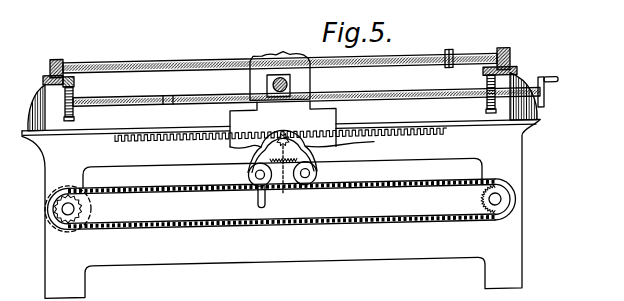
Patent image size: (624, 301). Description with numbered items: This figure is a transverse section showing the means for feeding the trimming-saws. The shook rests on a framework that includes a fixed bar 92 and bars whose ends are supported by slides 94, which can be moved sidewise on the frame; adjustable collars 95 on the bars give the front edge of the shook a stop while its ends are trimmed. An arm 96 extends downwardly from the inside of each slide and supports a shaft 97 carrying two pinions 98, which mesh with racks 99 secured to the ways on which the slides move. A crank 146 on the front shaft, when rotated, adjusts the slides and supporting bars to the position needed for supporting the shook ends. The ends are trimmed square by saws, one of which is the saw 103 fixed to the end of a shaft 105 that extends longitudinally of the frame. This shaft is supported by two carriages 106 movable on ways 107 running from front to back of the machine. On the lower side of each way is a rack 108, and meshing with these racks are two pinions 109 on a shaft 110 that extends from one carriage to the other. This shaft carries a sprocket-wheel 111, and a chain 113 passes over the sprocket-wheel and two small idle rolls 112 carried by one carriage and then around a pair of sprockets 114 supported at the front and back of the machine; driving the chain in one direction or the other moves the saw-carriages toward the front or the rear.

The fixed bar 92 is at (219, 58).
The slides 94 is at (63, 57).
The adjustable collars 95 is at (454, 54).
The arm 96 is at (75, 87).
The shaft 97 is at (170, 89).
The pinions 98 is at (74, 113).
The racks 99 is at (76, 72).
The saw 103 is at (279, 52).
The shaft 105 is at (288, 84).
The carriages 106 is at (319, 145).
The ways 107 is at (207, 124).
The rack 108 is at (175, 137).
The pinions 109 is at (244, 147).
The shaft 110 is at (291, 172).
The sprocket-wheel 111 is at (316, 165).
The idle rolls 112 is at (247, 172).
The chain 113 is at (372, 214).
The sprockets 114 is at (90, 208).
The crank 146 is at (545, 103).